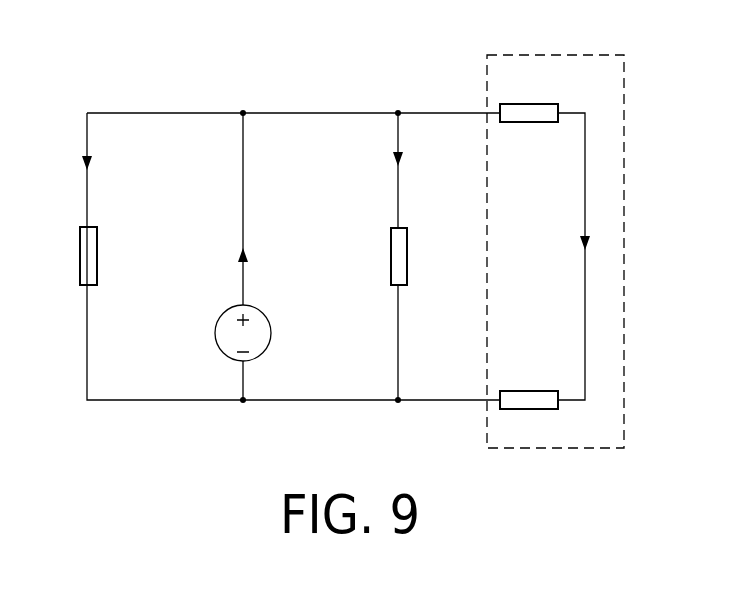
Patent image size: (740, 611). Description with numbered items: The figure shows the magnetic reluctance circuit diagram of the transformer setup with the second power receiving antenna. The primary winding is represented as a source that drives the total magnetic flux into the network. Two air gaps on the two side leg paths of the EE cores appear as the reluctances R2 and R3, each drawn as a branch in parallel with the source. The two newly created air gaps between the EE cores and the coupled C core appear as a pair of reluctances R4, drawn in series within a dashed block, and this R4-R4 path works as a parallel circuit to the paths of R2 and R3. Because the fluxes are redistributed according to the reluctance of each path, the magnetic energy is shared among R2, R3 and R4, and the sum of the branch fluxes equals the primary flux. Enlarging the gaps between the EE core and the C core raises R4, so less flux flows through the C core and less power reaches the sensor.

The air gap magnetic reluctance R2 is at (109, 256).
The air gap magnetic reluctance R3 is at (419, 256).
The air gap magnetic reluctance R4 is at (529, 237).